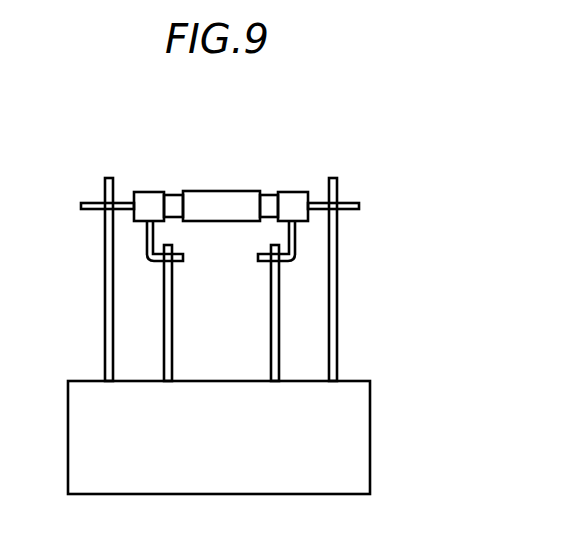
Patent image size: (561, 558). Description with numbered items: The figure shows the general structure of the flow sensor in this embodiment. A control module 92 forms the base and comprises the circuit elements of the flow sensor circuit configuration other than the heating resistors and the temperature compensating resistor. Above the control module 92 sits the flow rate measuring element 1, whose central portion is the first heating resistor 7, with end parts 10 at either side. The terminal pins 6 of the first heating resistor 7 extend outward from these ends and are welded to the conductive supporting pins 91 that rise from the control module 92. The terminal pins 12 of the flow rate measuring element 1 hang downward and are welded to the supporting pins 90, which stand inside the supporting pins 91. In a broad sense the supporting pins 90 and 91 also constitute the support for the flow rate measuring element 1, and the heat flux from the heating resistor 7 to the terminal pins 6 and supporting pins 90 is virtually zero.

The flow rate measuring element 1 is at (221, 172).
The terminal pins 6 is at (102, 202).
The first heating resistor 7 is at (205, 197).
The end block 10 is at (151, 197).
The terminal pins 12 is at (146, 242).
The supporting pins 90 is at (172, 352).
The conductive supporting pins 91 is at (104, 337).
The control module 92 is at (370, 437).